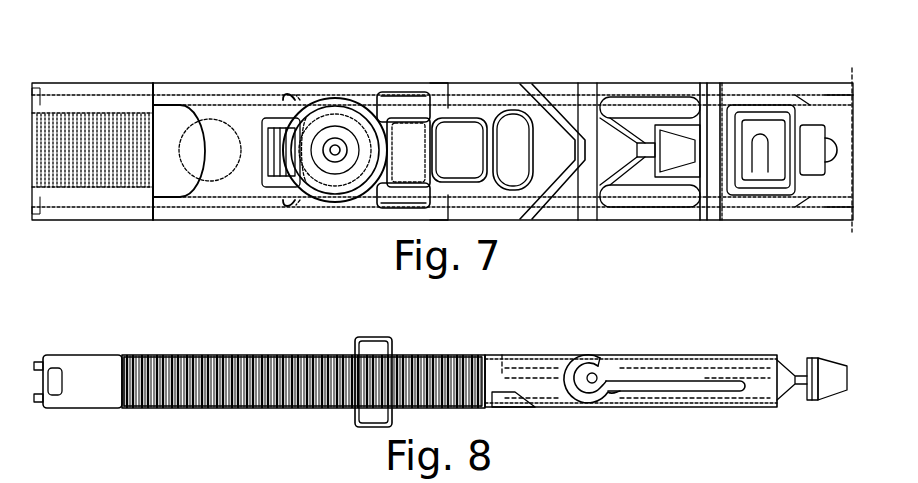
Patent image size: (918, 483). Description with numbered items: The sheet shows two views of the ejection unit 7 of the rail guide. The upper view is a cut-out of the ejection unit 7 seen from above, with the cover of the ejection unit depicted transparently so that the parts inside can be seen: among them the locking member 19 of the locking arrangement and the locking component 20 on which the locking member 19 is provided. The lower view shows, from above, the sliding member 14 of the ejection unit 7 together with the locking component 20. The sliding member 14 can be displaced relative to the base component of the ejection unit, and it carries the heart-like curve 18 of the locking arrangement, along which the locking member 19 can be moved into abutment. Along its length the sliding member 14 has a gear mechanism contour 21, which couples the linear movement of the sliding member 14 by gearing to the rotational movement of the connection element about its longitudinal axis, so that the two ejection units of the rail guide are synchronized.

In FIG. 7, the ejection unit 7 is at (567, 80).
In FIG. 7, the locking member 19 is at (338, 137).
In FIG. 7, the locking component 20 is at (402, 147).
In FIG. 8, the locking component 20 is at (586, 406).
In FIG. 8, the sliding member 14 is at (745, 342).
In FIG. 8, the heart-like curve 18 is at (656, 364).
In FIG. 8, the gear mechanism contour 21 is at (183, 402).